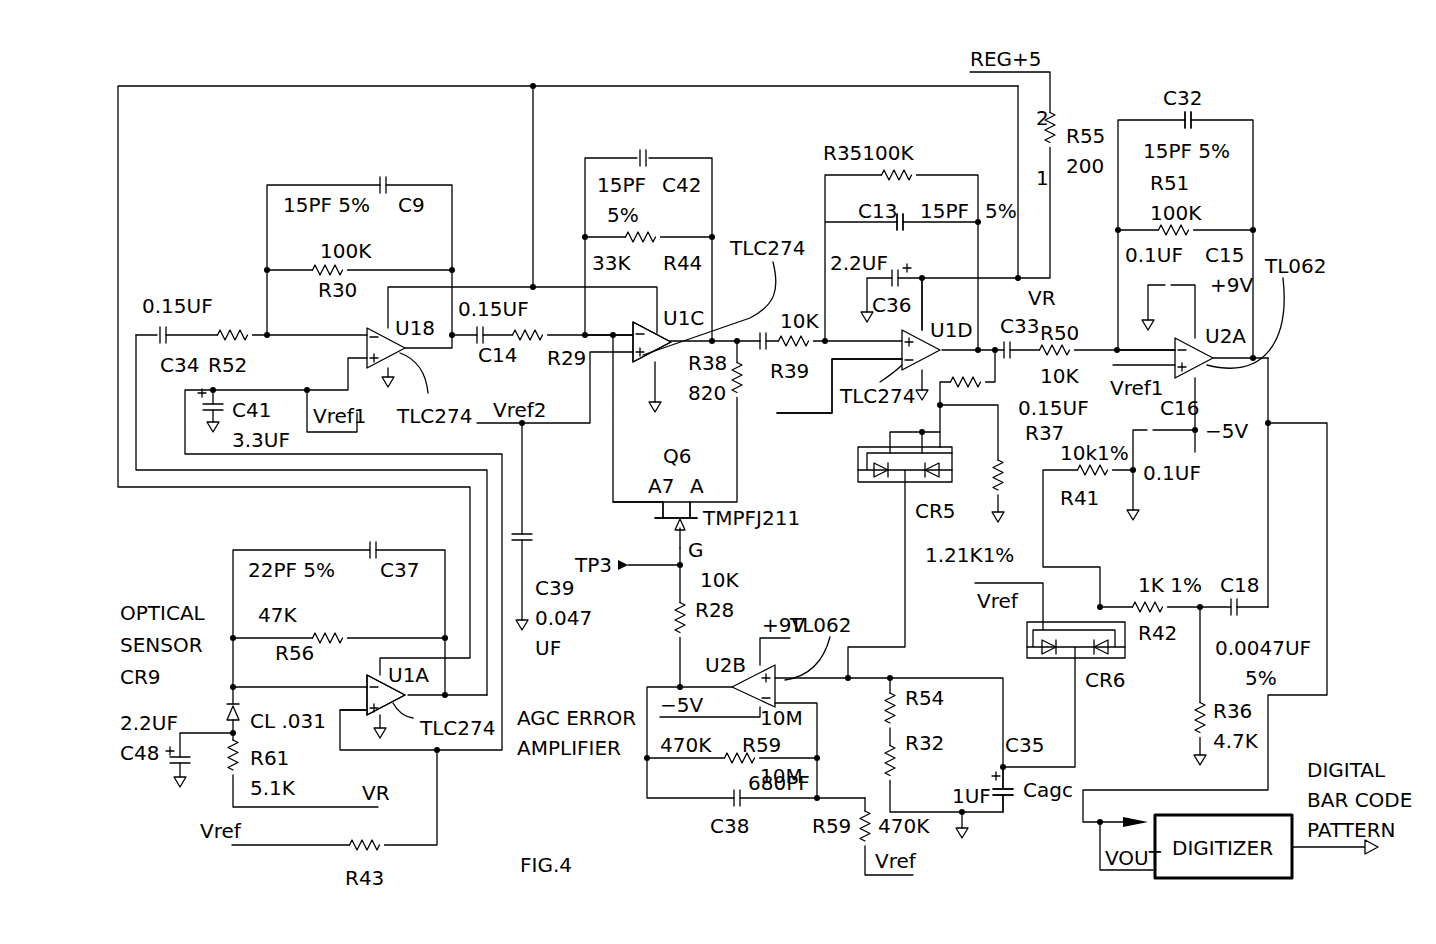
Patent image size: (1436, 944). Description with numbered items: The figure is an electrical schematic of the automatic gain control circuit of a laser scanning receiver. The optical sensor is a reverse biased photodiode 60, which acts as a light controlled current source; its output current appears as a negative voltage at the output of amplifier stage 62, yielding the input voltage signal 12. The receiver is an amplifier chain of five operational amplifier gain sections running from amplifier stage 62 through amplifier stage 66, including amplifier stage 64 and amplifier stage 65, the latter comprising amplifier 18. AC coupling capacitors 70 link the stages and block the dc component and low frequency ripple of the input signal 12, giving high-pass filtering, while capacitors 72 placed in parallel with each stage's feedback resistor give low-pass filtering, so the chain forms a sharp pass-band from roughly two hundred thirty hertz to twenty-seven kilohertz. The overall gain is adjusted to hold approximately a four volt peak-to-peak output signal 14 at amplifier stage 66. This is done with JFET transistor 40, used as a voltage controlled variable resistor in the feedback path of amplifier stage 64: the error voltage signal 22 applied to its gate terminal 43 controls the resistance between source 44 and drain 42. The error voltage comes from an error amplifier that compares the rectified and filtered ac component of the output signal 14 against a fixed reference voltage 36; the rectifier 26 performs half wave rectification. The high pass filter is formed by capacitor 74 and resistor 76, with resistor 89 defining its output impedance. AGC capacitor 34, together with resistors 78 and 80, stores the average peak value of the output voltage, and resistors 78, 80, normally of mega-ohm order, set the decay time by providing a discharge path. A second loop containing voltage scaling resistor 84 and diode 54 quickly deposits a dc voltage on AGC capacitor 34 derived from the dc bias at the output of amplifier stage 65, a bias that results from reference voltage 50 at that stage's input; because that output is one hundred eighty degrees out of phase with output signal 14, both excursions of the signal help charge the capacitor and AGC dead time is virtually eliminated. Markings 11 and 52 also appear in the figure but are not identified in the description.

The ground connection of amplifier U1C 11 is at (644, 393).
The input voltage signal 12 is at (610, 330).
The output signal 14 is at (1280, 398).
The amplifier 18 is at (925, 330).
The error voltage signal 22 is at (678, 602).
The rectifier 26 is at (1127, 655).
The AGC capacitor 34 is at (1012, 800).
The fixed reference voltage 36 is at (863, 876).
The transistor 40 is at (775, 537).
The drain terminal 42 is at (713, 500).
The gate terminal 43 is at (660, 518).
The source terminal 44 is at (633, 500).
The reference voltage 50 is at (788, 422).
The diode pair CR5 center tap 52 is at (937, 428).
The diode 54 is at (858, 480).
The photodiode 60 is at (222, 715).
The amplifier stage 62 is at (487, 205).
The amplifier stage 64 is at (745, 190).
The amplifier stage 65 is at (955, 160).
The amplifier stage 66 is at (1284, 116).
The ac coupling capacitors 70 is at (153, 343).
The capacitors 72 is at (380, 181).
The capacitor 74 is at (1243, 612).
The resistor 76 is at (1197, 720).
The resistor 78 is at (893, 697).
The resistor 80 is at (893, 772).
The voltage scaling resistor 84 is at (985, 530).
The resistor 89 is at (1130, 602).